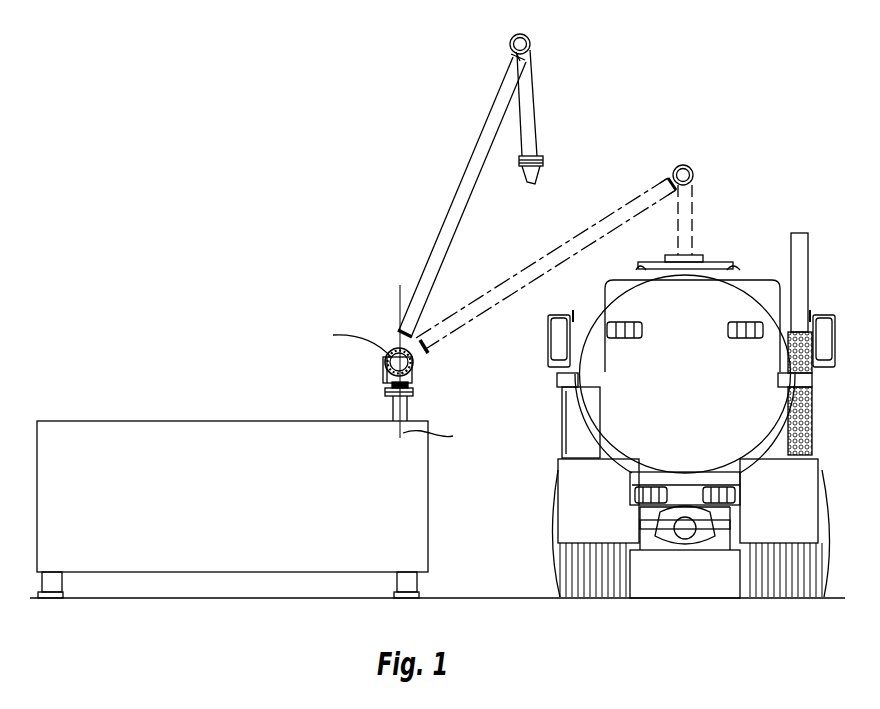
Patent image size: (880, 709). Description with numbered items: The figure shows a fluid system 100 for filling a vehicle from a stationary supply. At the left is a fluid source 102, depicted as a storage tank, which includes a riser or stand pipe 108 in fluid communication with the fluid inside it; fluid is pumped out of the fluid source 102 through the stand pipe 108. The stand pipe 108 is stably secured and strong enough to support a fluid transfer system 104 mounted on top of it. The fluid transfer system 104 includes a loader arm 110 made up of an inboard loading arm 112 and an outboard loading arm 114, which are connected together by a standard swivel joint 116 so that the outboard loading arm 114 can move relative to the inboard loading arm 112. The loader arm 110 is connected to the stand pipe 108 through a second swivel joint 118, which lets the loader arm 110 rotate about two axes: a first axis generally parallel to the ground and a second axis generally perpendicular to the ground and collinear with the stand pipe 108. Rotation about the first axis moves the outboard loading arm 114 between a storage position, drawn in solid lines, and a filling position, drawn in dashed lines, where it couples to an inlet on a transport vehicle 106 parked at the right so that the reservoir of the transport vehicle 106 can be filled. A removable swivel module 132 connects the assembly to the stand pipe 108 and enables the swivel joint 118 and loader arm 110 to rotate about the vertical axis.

The fluid system 100 is at (296, 140).
The fluid source 102 is at (208, 420).
The fluid transfer system 104 is at (418, 273).
The transport vehicle 106 is at (752, 244).
The stand pipe 108 is at (393, 412).
The loader arm 110 is at (460, 116).
The inboard loading arm 112 is at (450, 208).
The outboard loading arm 114 is at (536, 105).
The swivel joint 116 is at (529, 41).
The swivel joint 118 is at (385, 362).
The removable swivel module 132 is at (421, 382).